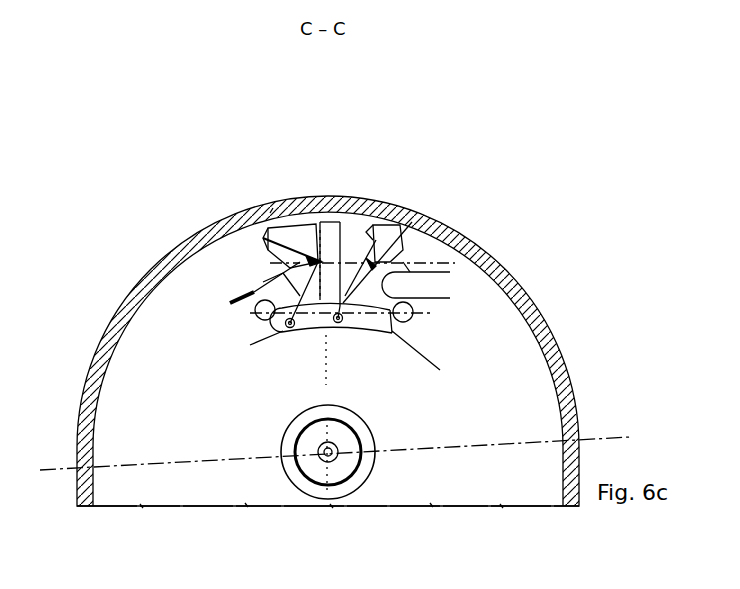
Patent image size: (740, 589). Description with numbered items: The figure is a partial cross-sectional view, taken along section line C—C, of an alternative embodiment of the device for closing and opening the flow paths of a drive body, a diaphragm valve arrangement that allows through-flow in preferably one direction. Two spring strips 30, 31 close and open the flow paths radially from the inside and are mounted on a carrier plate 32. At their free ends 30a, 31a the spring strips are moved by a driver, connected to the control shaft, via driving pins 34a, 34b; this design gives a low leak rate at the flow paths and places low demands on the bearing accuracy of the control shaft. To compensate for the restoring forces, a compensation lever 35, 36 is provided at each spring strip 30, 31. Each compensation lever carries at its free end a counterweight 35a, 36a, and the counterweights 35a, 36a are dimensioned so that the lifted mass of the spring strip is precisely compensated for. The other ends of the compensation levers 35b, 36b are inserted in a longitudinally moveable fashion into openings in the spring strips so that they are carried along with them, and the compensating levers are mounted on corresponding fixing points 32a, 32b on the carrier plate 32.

The spring strip 30 is at (282, 216).
The free end of spring strip 30a is at (290, 292).
The spring strip 31 is at (385, 222).
The free end of spring strip 31a is at (420, 247).
The carrier plate 32 is at (372, 302).
The fixing point 32a is at (263, 239).
The fixing point 32b is at (376, 240).
The driving pin 34a is at (286, 326).
The driving pin 34b is at (413, 313).
The compensation lever 35 is at (283, 279).
The counterweight 35a is at (230, 303).
The other end of compensation lever 35b is at (320, 230).
The compensation lever 36 is at (374, 264).
The counterweight 36a is at (420, 272).
The other end of compensation lever 36b is at (378, 225).